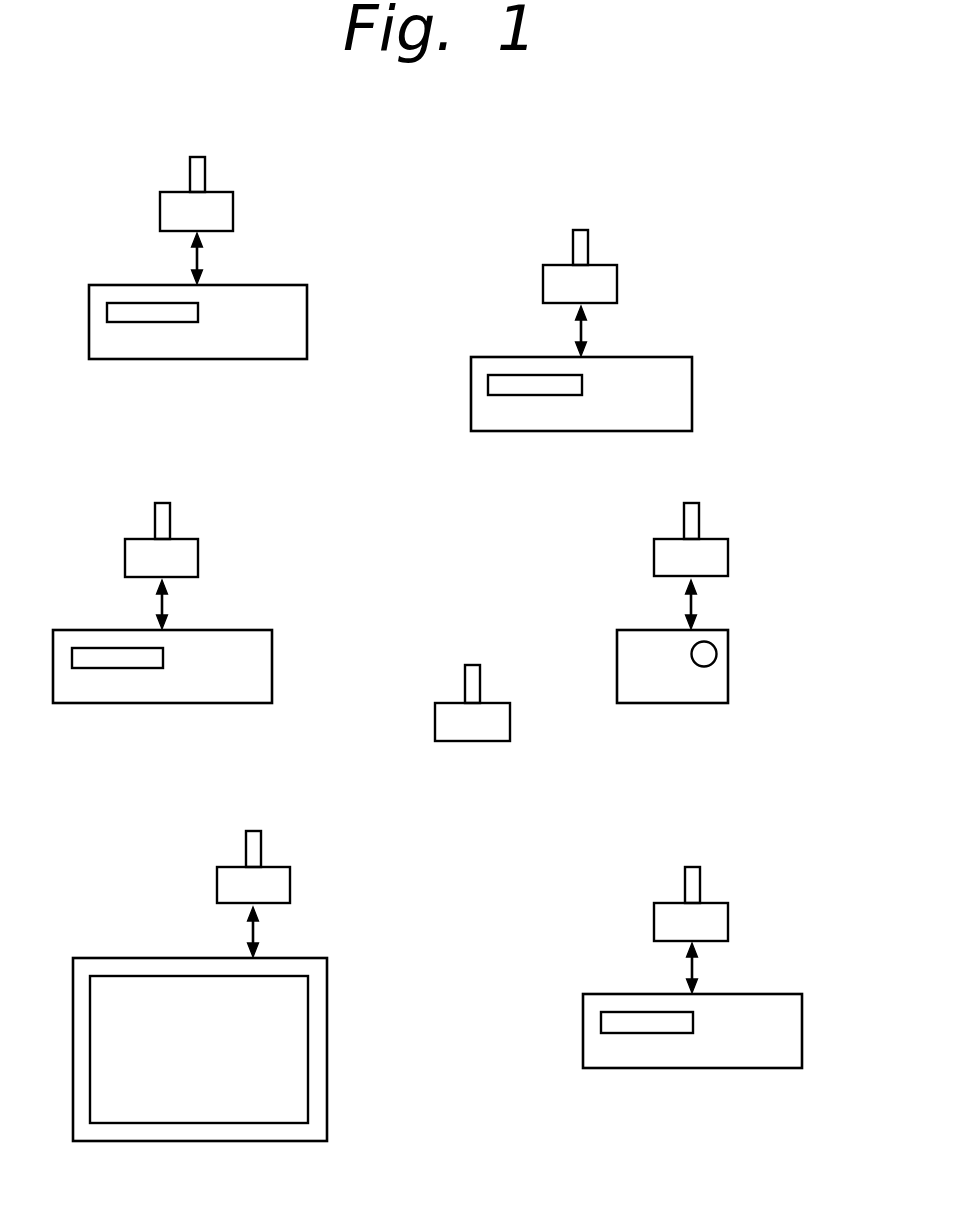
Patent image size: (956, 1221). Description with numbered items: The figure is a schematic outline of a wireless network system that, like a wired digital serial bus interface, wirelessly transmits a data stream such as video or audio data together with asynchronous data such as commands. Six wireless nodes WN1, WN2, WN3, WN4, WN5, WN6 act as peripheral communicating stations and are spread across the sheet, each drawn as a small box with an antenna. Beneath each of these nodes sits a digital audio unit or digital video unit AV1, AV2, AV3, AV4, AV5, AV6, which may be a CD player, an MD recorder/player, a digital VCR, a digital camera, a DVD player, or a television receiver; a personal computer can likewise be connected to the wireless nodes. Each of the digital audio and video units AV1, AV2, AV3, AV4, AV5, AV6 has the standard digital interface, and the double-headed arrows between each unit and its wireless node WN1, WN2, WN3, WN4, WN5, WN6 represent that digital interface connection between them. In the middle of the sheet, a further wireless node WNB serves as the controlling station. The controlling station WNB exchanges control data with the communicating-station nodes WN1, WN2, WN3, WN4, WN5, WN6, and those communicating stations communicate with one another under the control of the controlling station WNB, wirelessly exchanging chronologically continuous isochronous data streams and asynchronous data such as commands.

The wireless node WN1 is at (235, 210).
The wireless node WN2 is at (619, 285).
The wireless node WN3 is at (730, 557).
The wireless node WN4 is at (730, 920).
The wireless node WN5 is at (292, 882).
The wireless node WN6 is at (200, 557).
The wireless node as controlling station WNB is at (435, 720).
The digital audio unit or digital video unit AV1 is at (105, 283).
The digital audio unit or digital video unit AV2 is at (489, 355).
The digital audio unit or digital video unit AV3 is at (630, 628).
The digital audio unit or digital video unit AV4 is at (600, 992).
The digital audio unit or digital video unit AV5 is at (125, 957).
The digital audio unit or digital video unit AV6 is at (70, 628).